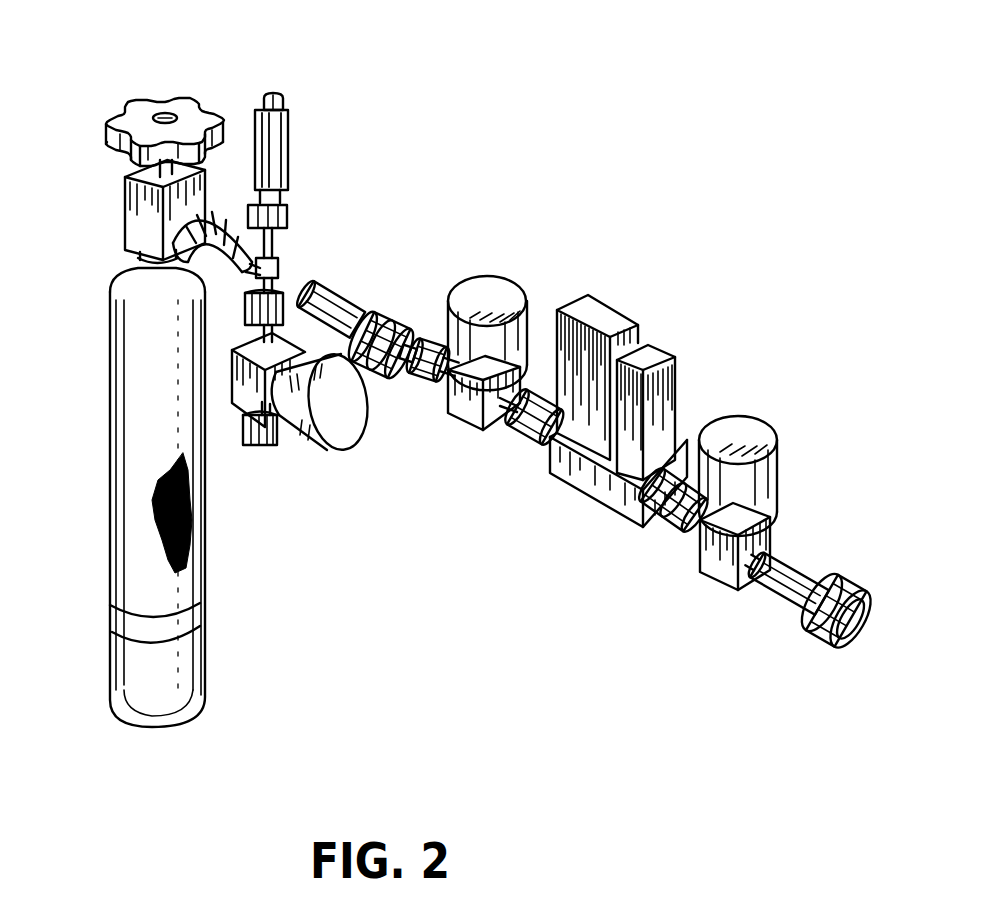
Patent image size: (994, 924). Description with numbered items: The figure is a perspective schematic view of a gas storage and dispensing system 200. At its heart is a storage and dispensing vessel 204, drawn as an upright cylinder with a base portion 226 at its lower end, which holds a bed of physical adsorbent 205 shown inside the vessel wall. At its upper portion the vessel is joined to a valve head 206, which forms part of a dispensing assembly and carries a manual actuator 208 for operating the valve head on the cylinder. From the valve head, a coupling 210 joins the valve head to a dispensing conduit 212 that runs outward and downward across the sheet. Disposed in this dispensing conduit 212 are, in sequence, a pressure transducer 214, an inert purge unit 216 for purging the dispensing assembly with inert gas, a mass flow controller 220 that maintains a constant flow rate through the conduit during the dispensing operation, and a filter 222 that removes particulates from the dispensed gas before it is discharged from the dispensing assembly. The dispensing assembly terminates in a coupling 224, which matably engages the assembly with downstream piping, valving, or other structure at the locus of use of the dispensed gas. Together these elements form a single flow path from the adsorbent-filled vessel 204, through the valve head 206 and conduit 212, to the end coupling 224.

The gas storage and dispensing system 200 is at (441, 134).
The storage and dispensing vessel 204 is at (135, 430).
The bed of physical adsorbent 205 is at (190, 506).
The valve head 206 is at (123, 200).
The manual actuator 208 is at (187, 95).
The coupling 210 is at (135, 264).
The dispensing conduit 212 is at (284, 282).
The pressure transducer 214 is at (286, 156).
The inert purge unit 216 is at (345, 427).
The mass flow controller 220 is at (643, 291).
The filter 222 is at (783, 470).
The coupling 224 is at (824, 642).
The base portion 226 is at (140, 705).